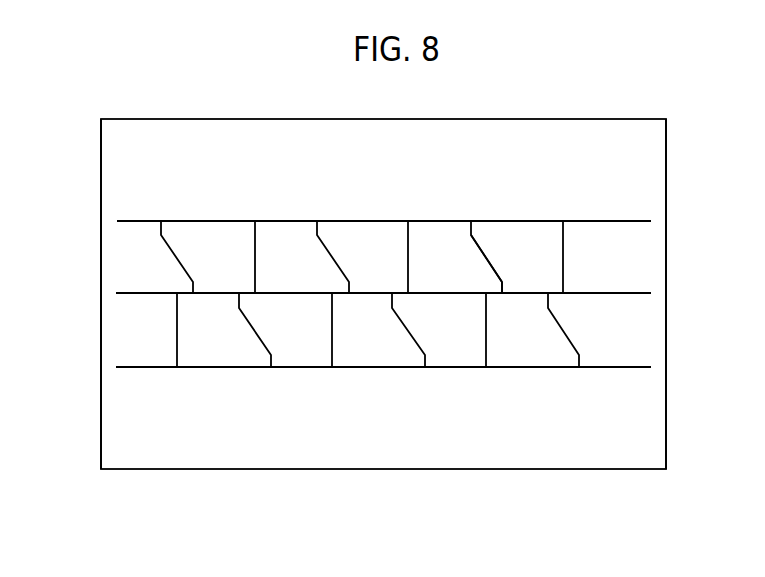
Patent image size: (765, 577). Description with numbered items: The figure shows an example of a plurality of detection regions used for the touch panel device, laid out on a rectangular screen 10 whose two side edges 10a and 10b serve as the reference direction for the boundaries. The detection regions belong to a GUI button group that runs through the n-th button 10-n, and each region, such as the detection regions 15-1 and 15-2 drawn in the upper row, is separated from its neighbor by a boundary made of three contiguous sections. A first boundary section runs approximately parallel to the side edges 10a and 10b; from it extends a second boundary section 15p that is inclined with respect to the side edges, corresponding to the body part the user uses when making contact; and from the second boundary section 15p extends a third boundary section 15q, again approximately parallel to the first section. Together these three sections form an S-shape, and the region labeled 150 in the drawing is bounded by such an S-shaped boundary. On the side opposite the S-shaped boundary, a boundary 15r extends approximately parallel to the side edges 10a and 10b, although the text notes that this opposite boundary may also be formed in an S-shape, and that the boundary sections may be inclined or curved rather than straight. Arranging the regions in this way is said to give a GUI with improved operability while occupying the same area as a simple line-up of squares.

The rectangular screen 10 is at (650, 174).
The side edge of the rectangular screen 10a is at (101, 270).
The side edge of the rectangular screen 10b is at (660, 210).
The GUI button 10-n is at (535, 357).
The detection region 15-1 is at (215, 230).
The detection region 15-2 is at (278, 232).
The wiring element 150 is at (482, 222).
The second boundary section 15p is at (490, 260).
The third boundary section 15q is at (505, 287).
The boundary 15r is at (563, 278).